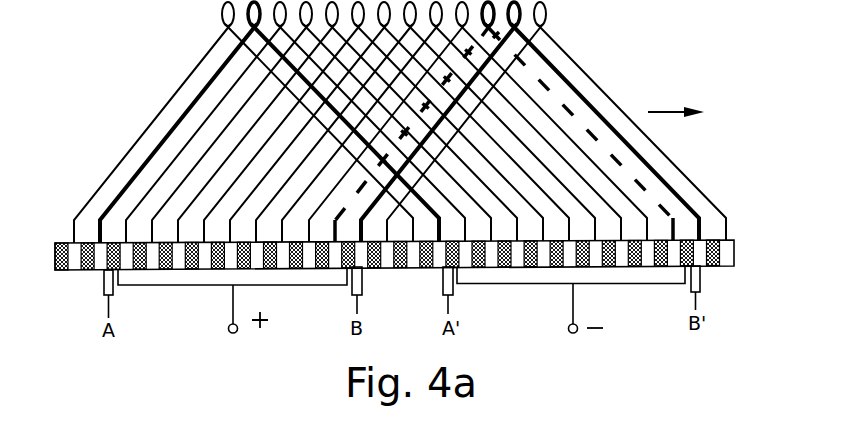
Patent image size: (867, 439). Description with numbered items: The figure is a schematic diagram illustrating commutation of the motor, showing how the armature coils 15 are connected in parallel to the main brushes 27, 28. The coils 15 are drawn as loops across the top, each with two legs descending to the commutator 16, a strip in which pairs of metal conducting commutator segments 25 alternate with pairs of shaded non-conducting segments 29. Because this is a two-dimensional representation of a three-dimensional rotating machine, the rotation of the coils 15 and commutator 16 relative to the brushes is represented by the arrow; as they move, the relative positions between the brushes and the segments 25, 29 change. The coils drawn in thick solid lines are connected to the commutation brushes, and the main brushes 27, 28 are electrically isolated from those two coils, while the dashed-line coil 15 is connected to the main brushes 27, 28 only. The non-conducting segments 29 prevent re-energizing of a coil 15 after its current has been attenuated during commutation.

The coil 15 is at (582, 61).
The commutator 16 is at (55, 236).
The conducting commutator segment 25 is at (75, 271).
The main brush 27 is at (156, 287).
The main brush 28 is at (615, 284).
The non-conducting segment 29 is at (372, 268).